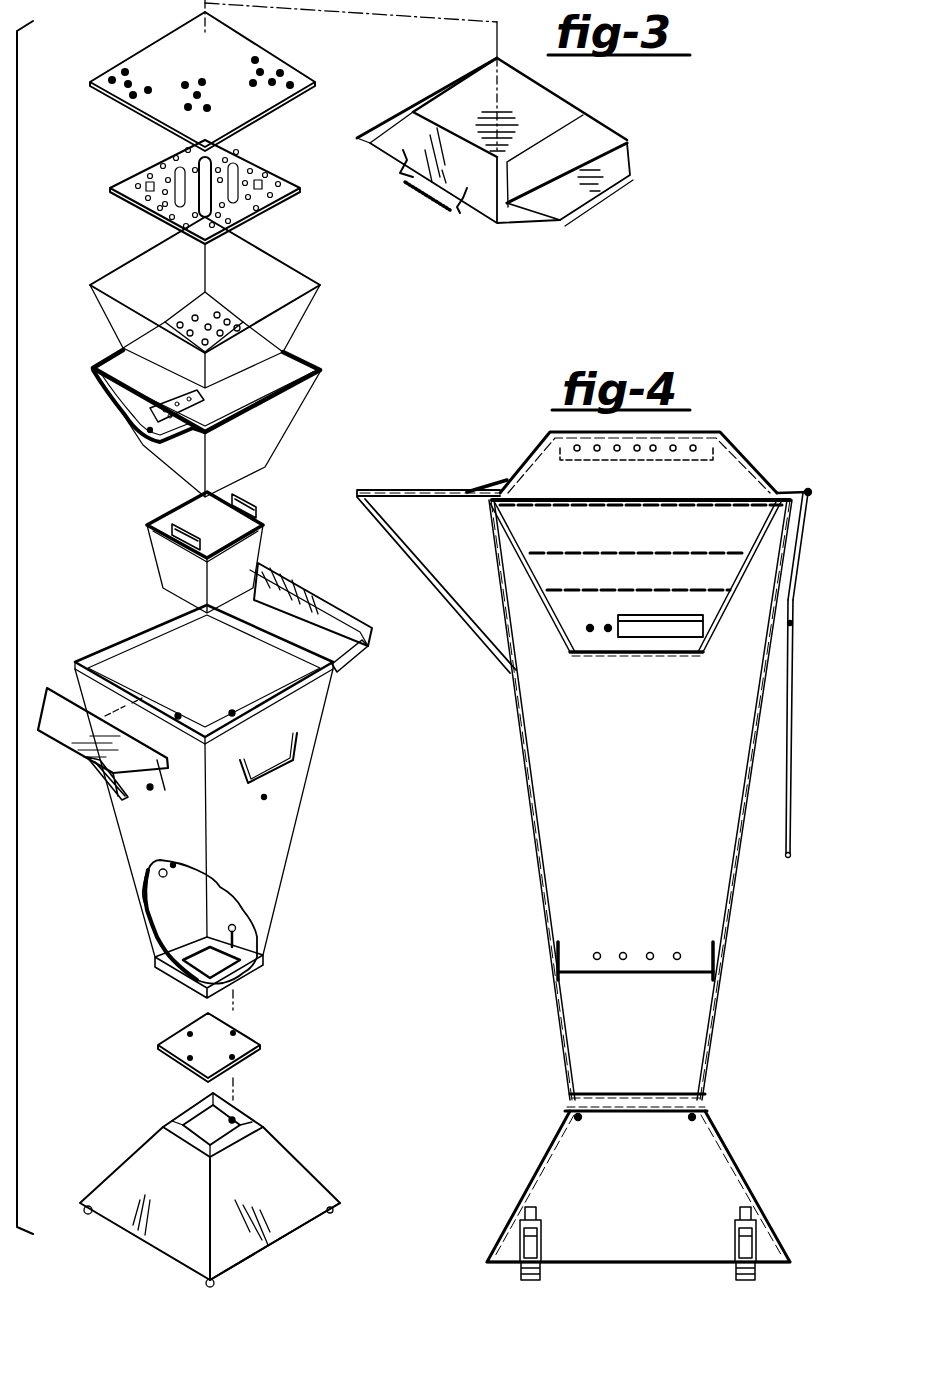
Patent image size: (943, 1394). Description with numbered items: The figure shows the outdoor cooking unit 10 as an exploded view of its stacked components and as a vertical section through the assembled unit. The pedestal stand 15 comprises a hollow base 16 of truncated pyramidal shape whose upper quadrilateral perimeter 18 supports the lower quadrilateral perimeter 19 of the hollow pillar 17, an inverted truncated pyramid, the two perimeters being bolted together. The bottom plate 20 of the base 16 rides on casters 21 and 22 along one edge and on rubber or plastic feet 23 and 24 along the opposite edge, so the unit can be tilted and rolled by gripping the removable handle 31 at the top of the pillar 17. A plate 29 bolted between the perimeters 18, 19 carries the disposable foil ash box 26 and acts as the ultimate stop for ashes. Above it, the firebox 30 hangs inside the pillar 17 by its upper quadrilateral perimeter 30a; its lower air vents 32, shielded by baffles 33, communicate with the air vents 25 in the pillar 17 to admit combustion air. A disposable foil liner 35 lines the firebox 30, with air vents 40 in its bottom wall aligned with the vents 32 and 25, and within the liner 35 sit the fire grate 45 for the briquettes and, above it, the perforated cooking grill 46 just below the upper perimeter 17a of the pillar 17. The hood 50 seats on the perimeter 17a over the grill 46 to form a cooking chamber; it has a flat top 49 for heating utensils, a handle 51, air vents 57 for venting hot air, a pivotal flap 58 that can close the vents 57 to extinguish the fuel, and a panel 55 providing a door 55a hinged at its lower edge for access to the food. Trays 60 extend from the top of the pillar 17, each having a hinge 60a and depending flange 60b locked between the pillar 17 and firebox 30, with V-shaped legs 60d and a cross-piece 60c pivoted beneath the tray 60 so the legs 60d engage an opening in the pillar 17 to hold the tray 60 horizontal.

In FIG. 3, the outdoor cooking unit 10 is at (345, 824).
In FIG. 4, the outdoor cooking unit 10 is at (806, 438).
In FIG. 3, the pedestal stand 15 is at (209, 772).
In FIG. 4, the pedestal stand 15 is at (601, 775).
In FIG. 3, the hollow base 16 is at (210, 1193).
In FIG. 4, the hollow base 16 is at (647, 1196).
In FIG. 3, the hollow pillar 17 is at (216, 797).
In FIG. 4, the hollow pillar 17 is at (609, 800).
In FIG. 3, the upper quadrilateral perimeter of the pillar 17a is at (114, 636).
In FIG. 4, the upper quadrilateral perimeter of the pillar 17a is at (487, 505).
In FIG. 3, the upper quadrilateral perimeter of the base 18 is at (180, 1117).
In FIG. 4, the upper quadrilateral perimeter of the base 18 is at (594, 1121).
In FIG. 3, the lower quadrilateral perimeter of the pillar 19 is at (263, 959).
In FIG. 4, the lower quadrilateral perimeter of the pillar 19 is at (593, 1092).
In FIG. 3, the bottom plate 20 is at (283, 1240).
In FIG. 4, the bottom plate 20 is at (603, 1263).
In FIG. 3, the caster 21 is at (92, 1215).
In FIG. 4, the caster 21 is at (541, 1270).
In FIG. 3, the caster 22 is at (214, 1282).
In FIG. 3, the foot 23 is at (331, 1215).
In FIG. 4, the foot 24 is at (765, 1270).
In FIG. 3, the air vents of the pillar 25 is at (152, 915).
In FIG. 4, the air vents of the pillar 25 is at (624, 961).
In FIG. 3, the disposable ash box 26 is at (152, 560).
In FIG. 4, the disposable ash box 26 is at (635, 977).
In FIG. 3, the plate 29 is at (167, 1040).
In FIG. 4, the plate 29 is at (640, 1115).
In FIG. 3, the firebox 30 is at (210, 421).
In FIG. 4, the firebox 30 is at (645, 673).
In FIG. 3, the upper quadrilateral perimeter of the firebox 30a is at (318, 366).
In FIG. 3, the removable handle 31 is at (300, 778).
In FIG. 3, the air vents of the firebox 32 is at (167, 440).
In FIG. 4, the air vents of the firebox 32 is at (608, 639).
In FIG. 3, the baffle 33 is at (200, 408).
In FIG. 4, the baffle 33 is at (681, 629).
In FIG. 3, the foil liner 35 is at (198, 302).
In FIG. 4, the foil liner 35 is at (636, 576).
In FIG. 3, the air vents of the foil liner 40 is at (233, 317).
In FIG. 4, the air vents of the foil liner 40 is at (686, 576).
In FIG. 3, the fire grate 45 is at (137, 172).
In FIG. 4, the fire grate 45 is at (627, 551).
In FIG. 3, the cooking grill 46 is at (145, 53).
In FIG. 4, the cooking grill 46 is at (683, 503).
In FIG. 3, the flat top 49 is at (468, 90).
In FIG. 3, the hood 50 is at (527, 148).
In FIG. 4, the hood 50 is at (646, 443).
In FIG. 3, the handle of the hood 51 is at (452, 212).
In FIG. 4, the handle of the hood 51 is at (470, 487).
In FIG. 3, the hood panel 55 is at (618, 138).
In FIG. 4, the hood panel 55 is at (636, 451).
In FIG. 3, the door 55a is at (617, 175).
In FIG. 4, the air vents of the hood 57 is at (614, 428).
In FIG. 3, the pivotal flap 58 is at (430, 105).
In FIG. 4, the pivotal flap 58 is at (731, 436).
In FIG. 3, the tray 60 is at (209, 695).
In FIG. 4, the tray 60 is at (601, 654).
In FIG. 3, the hinge 60a is at (312, 570).
In FIG. 3, the depending flange 60b is at (345, 624).
In FIG. 4, the depending flange 60b is at (487, 527).
In FIG. 3, the cross-piece 60c is at (100, 779).
In FIG. 4, the cross-piece 60c is at (458, 611).
In FIG. 3, the legs 60d is at (148, 789).
In FIG. 4, the legs 60d is at (473, 632).